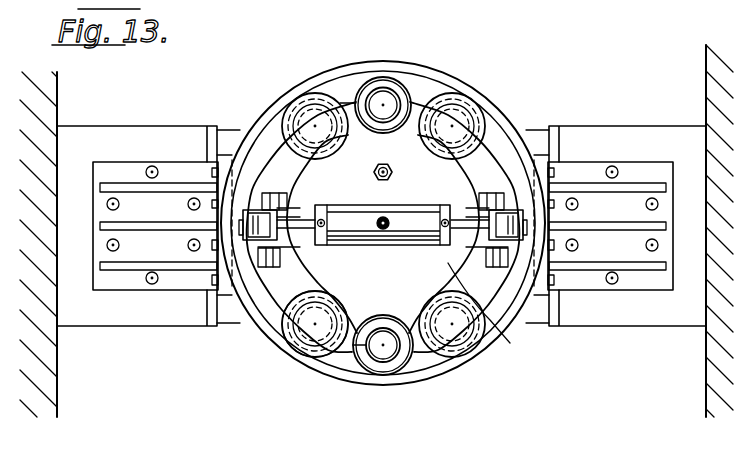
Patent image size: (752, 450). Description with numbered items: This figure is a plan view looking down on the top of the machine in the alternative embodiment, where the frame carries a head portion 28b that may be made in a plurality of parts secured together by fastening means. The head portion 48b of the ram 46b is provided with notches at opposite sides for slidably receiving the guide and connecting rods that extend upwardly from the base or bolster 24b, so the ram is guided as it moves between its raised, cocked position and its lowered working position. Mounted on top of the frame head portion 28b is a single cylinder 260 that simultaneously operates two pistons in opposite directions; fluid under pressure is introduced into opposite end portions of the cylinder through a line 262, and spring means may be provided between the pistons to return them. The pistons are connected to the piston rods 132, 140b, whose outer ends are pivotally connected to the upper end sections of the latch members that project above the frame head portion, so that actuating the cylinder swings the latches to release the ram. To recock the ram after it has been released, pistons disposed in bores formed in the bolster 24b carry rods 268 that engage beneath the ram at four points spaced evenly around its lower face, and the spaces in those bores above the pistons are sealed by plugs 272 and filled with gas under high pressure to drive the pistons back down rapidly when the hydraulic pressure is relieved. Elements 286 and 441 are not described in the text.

The base or bolster 24b is at (490, 338).
The head portion 28b is at (510, 343).
The ram 46b is at (262, 302).
The head portion of the ram 48b is at (282, 298).
The piston rod 132 is at (287, 207).
The piston rod 140b is at (468, 188).
The cylinder 260 is at (363, 235).
The line 262 is at (385, 231).
The rods 268 is at (313, 110).
The plugs 272 is at (287, 338).
The roller 286 is at (413, 357).
The nut 441 is at (378, 177).